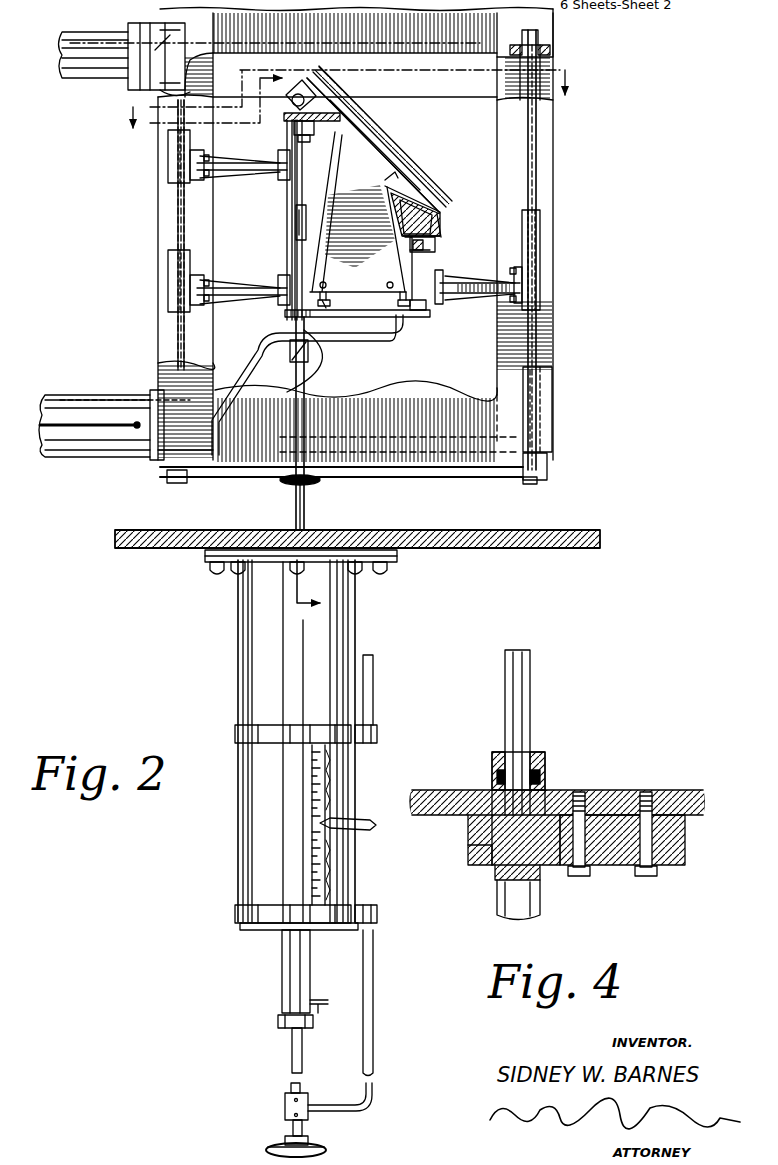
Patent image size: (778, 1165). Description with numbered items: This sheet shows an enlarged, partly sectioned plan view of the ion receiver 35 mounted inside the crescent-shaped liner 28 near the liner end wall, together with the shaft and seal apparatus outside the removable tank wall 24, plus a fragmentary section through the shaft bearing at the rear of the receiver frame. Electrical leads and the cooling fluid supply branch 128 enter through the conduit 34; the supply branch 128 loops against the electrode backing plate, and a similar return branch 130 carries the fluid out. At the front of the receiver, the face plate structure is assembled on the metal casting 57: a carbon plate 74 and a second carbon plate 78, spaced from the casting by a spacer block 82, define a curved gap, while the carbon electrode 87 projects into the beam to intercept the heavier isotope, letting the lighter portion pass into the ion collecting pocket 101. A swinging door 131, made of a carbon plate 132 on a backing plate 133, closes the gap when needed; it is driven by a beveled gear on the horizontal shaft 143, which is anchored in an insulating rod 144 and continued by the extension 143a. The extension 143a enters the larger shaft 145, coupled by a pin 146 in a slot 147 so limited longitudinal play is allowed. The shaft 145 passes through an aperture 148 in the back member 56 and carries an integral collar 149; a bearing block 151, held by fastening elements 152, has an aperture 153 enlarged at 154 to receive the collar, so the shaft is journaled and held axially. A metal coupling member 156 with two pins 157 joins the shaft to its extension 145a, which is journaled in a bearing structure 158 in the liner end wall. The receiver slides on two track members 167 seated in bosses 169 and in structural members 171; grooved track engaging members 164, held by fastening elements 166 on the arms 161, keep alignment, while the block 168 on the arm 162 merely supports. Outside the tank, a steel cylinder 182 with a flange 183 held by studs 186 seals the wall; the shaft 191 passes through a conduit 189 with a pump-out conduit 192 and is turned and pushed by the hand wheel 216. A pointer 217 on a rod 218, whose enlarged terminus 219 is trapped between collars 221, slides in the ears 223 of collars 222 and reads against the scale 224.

In FIG. 2, the removable wall of the tank 24 is at (440, 527).
In FIG. 2, the liner 28 is at (553, 335).
In FIG. 2, the conduit 34 is at (112, 458).
In FIG. 2, the ion receiver 35 is at (432, 236).
In FIG. 2, the back member 56 is at (404, 326).
In FIG. 4, the back member 56 is at (672, 792).
In FIG. 2, the metal casting 57 is at (422, 200).
In FIG. 2, the carbon plate 74 is at (350, 162).
In FIG. 2, the second carbon plate 78 is at (425, 188).
In FIG. 2, the spacer block 82 is at (441, 215).
In FIG. 2, the carbon electrode 87 is at (401, 192).
In FIG. 2, the ion collecting pocket 101 is at (387, 270).
In FIG. 2, the supply branch of cooling fluid line 128 is at (436, 246).
In FIG. 2, the return branch of cooling fluid line 130 is at (380, 346).
In FIG. 2, the swinging door 131 is at (324, 92).
In FIG. 2, the carbon plate of door 132 is at (390, 165).
In FIG. 2, the backing plate of door 133 is at (348, 145).
In FIG. 2, the horizontal shaft 143 is at (287, 148).
In FIG. 2, the shaft extension 143a is at (300, 251).
In FIG. 4, the shaft extension 143a is at (530, 712).
In FIG. 2, the insulating rod 144 is at (296, 224).
In FIG. 2, the shaft 145 is at (306, 346).
In FIG. 4, the shaft 145 is at (505, 898).
In FIG. 2, the shaft extension 145a is at (296, 505).
In FIG. 4, the pin 146 is at (542, 770).
In FIG. 4, the slot 147 is at (545, 785).
In FIG. 4, the aperture 148 is at (492, 792).
In FIG. 4, the integral collar 149 is at (488, 848).
In FIG. 4, the bearing block 151 is at (680, 866).
In FIG. 4, the fastening elements 152 is at (640, 876).
In FIG. 4, the aperture 153 is at (541, 870).
In FIG. 4, the enlarged portion of aperture 154 is at (490, 826).
In FIG. 2, the metal coupling member 156 is at (311, 362).
In FIG. 2, the pins 157 is at (293, 362).
In FIG. 2, the bearing structure 158 is at (314, 485).
In FIG. 2, the receiver supporting arms 161 is at (246, 180).
In FIG. 2, the receiver supporting arm 162 is at (520, 297).
In FIG. 2, the track engaging members 164 is at (176, 168).
In FIG. 2, the fastening elements 166 is at (176, 174).
In FIG. 2, the track members 167 is at (178, 208).
In FIG. 2, the track engaging member 168 is at (538, 228).
In FIG. 2, the bosses 169 is at (175, 484).
In FIG. 2, the structural members 171 is at (148, 94).
In FIG. 2, the cylinder 182 is at (240, 648).
In FIG. 2, the annular flange 183 is at (397, 561).
In FIG. 2, the studs 186 is at (228, 568).
In FIG. 2, the conduit 189 is at (282, 955).
In FIG. 2, the shaft 191 is at (292, 1048).
In FIG. 2, the pump-out conduit 192 is at (333, 1013).
In FIG. 2, the hand wheel 216 is at (276, 1144).
In FIG. 2, the pointer 217 is at (376, 828).
In FIG. 2, the rod 218 is at (373, 998).
In FIG. 2, the enlarged terminus 219 is at (310, 1114).
In FIG. 2, the collars 221 is at (285, 1098).
In FIG. 2, the collars 222 is at (238, 727).
In FIG. 2, the ears 223 is at (374, 722).
In FIG. 2, the scale 224 is at (330, 790).